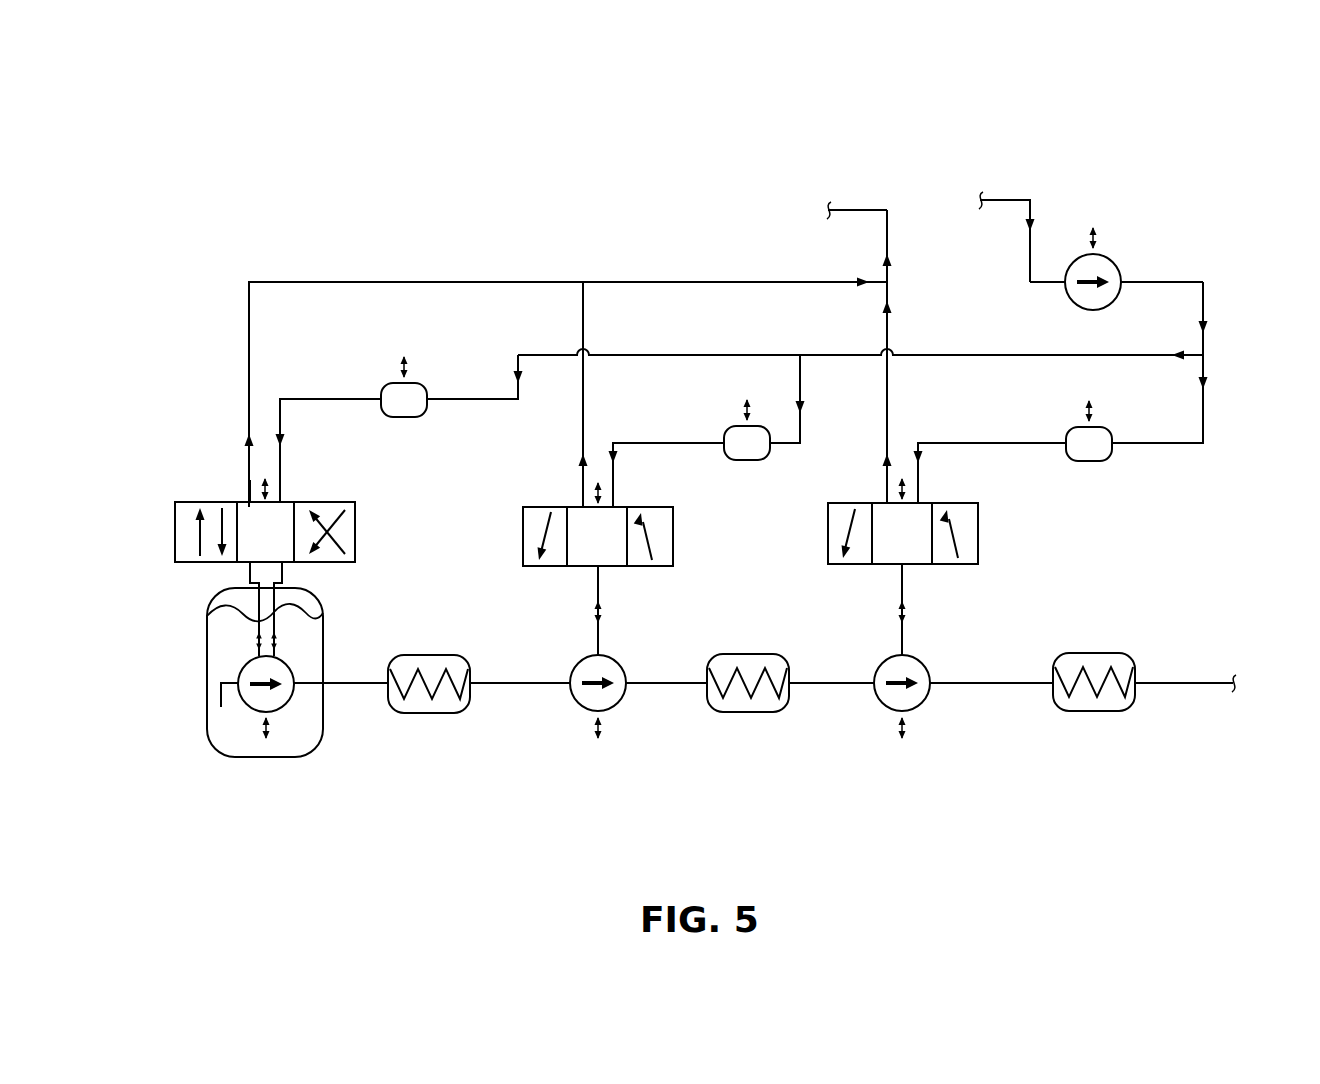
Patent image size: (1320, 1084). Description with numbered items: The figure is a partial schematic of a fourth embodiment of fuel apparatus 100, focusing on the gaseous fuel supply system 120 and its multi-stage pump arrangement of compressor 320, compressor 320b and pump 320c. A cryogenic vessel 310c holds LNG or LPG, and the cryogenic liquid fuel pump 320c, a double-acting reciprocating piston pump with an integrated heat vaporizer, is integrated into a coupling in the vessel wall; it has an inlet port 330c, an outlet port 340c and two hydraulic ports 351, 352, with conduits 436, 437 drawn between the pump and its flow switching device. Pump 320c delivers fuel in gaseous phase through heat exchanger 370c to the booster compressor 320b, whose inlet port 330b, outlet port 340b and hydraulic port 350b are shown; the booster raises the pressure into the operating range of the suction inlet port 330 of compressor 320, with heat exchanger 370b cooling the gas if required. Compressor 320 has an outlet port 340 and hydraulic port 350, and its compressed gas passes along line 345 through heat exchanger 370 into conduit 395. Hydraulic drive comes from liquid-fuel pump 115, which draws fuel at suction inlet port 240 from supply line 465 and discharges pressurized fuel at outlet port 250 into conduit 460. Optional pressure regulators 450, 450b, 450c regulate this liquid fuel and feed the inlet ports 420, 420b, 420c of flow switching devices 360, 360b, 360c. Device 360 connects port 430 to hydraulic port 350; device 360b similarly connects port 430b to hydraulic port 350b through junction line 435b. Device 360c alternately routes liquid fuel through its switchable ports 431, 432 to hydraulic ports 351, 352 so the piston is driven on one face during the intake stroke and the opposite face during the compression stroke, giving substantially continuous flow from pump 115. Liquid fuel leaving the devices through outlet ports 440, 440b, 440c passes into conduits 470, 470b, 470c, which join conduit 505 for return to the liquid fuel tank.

The fuel apparatus 100 is at (1254, 130).
The gaseous fuel supply system 120 is at (174, 287).
The conduit 505 is at (848, 208).
The liquid-fuel pump 115 is at (1100, 257).
The outlet port 250 is at (1122, 280).
The inlet line 465 is at (1030, 255).
The suction inlet port 240 is at (1064, 286).
The conduit 460 is at (1162, 284).
The conduit 470 is at (888, 385).
The conduit 470b is at (585, 315).
The conduit 470c is at (250, 315).
The pressure regulator 450 is at (1108, 430).
The pressure regulator 450b is at (735, 427).
The pressure regulator 450c is at (411, 383).
The outlet port 440 is at (885, 500).
The outlet port 440b is at (581, 503).
The outlet port 440c is at (248, 500).
The inlet port 420 is at (921, 500).
The inlet port 420b is at (616, 505).
The inlet port 420c is at (285, 501).
The flow switching device 360 is at (820, 509).
The flow switching device 360b is at (514, 507).
The flow switching device 360c is at (254, 525).
The switchable port 431 is at (290, 564).
The switchable port 432 is at (235, 563).
The conduit 436 is at (277, 612).
The conduit 437 is at (256, 612).
The hydraulic port 351 is at (277, 655).
The hydraulic port 352 is at (256, 655).
The cryogenic vessel 310c is at (300, 757).
The inlet port 330c is at (245, 666).
The cryogenic liquid fuel pump 320c is at (250, 705).
The outlet port 340c is at (290, 690).
The heat exchanger 370c is at (425, 655).
The port 430b is at (600, 572).
The hydraulic port 350b is at (598, 650).
The junction line 435b is at (598, 650).
The inlet port 330b is at (578, 702).
The compressor 320b is at (578, 670).
The outlet port 340b is at (620, 702).
The heat exchanger 370b is at (745, 654).
The port 430 is at (905, 568).
The hydraulic port 350 is at (902, 650).
The inlet port 330 is at (882, 702).
The compressor 320 is at (882, 670).
The outlet port 340 is at (922, 702).
The line 345 is at (1015, 685).
The heat exchanger 370 is at (1105, 653).
The conduit 395 is at (1185, 685).